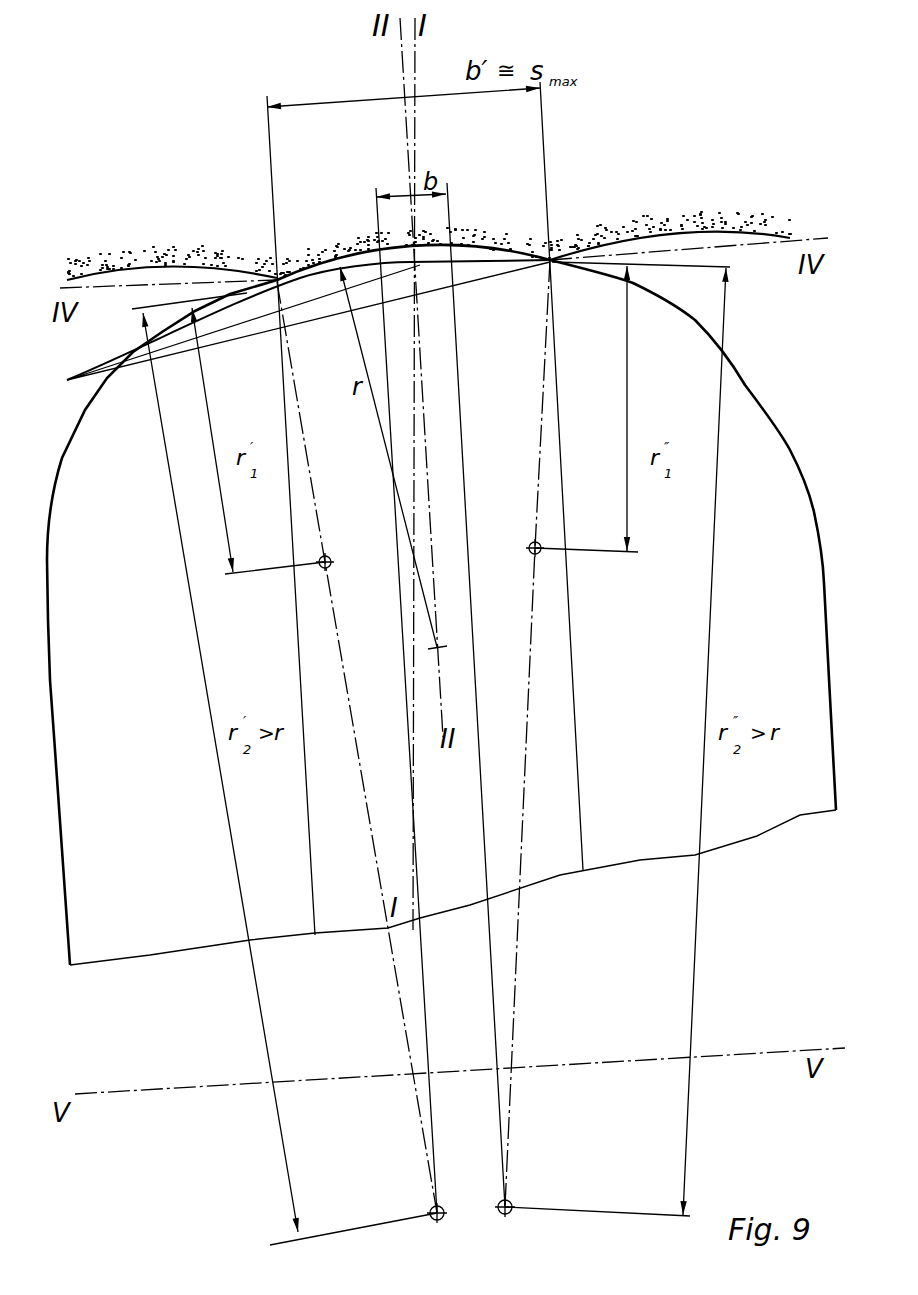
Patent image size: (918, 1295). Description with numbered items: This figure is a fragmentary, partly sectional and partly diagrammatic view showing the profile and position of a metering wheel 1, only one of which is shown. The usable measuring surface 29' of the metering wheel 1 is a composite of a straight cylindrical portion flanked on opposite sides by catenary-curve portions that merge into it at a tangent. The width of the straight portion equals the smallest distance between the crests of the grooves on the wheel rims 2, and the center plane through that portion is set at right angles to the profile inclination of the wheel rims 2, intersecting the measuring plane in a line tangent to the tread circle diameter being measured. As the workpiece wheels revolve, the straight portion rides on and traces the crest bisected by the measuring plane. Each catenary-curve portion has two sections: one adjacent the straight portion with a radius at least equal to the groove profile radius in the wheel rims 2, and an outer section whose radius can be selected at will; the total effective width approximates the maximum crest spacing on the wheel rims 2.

The metering wheel 1 is at (441, 630).
The wheel rims 2 is at (630, 230).
The usable measuring surface 29' is at (287, 329).